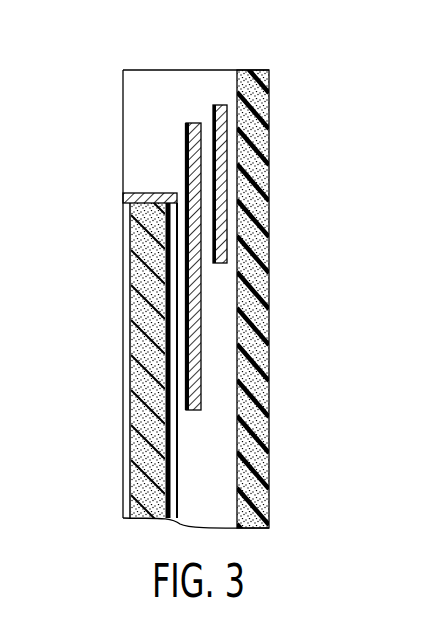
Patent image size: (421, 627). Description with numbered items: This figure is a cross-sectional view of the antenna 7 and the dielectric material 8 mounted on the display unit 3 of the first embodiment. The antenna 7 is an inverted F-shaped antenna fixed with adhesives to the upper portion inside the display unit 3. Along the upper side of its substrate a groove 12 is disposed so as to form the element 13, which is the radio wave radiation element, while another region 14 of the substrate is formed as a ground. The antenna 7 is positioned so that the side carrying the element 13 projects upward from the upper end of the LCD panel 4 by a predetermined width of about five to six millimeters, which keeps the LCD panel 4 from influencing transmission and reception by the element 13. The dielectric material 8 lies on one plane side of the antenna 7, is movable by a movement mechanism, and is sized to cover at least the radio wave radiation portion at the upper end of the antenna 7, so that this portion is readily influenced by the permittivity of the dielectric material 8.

The display unit 3 is at (270, 246).
The LCD panel 4 is at (133, 347).
The antenna 7 is at (173, 174).
The dielectric material 8 is at (225, 107).
The groove 12 is at (187, 140).
The element 13 is at (197, 123).
The region 14 is at (187, 160).